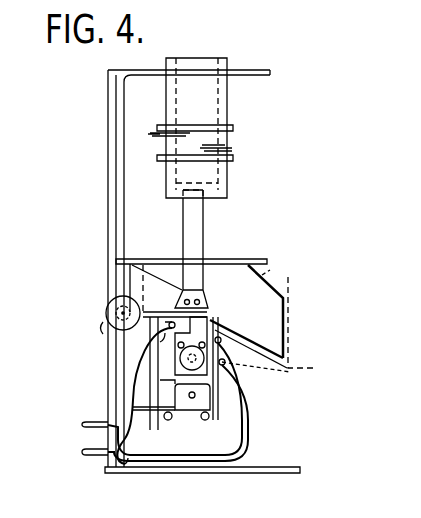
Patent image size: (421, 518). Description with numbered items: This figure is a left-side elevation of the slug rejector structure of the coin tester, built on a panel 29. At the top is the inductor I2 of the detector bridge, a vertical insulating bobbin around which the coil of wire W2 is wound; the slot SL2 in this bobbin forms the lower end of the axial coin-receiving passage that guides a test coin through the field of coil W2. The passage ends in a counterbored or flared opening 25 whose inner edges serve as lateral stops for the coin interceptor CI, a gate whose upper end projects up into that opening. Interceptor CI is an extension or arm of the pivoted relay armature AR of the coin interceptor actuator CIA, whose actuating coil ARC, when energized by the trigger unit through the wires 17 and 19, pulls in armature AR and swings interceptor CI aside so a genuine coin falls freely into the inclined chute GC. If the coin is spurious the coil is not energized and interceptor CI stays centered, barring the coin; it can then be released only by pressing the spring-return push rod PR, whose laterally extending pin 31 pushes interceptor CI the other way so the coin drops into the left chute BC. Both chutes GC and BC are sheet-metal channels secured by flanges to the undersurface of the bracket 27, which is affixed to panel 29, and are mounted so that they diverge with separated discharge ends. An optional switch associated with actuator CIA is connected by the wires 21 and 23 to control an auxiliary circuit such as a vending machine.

The slot SL2 is at (229, 97).
The inductor I2 is at (243, 138).
The coil of wire W2 is at (234, 150).
The flared opening 25 is at (228, 193).
The coin interceptor CI is at (188, 231).
The panel 29 is at (113, 211).
The spring-return push rod PR is at (108, 309).
The pin 31 is at (161, 312).
The coin interceptor actuator CIA is at (214, 323).
The bracket 27 is at (245, 263).
The coin receiving chute GC is at (272, 282).
The actuating coil ARC is at (232, 325).
The relay armature AR is at (240, 372).
The coin receiving chute BC is at (296, 368).
The wire 23 is at (132, 410).
The wire 17 is at (245, 422).
The wire 19 is at (247, 432).
The wire 21 is at (127, 464).